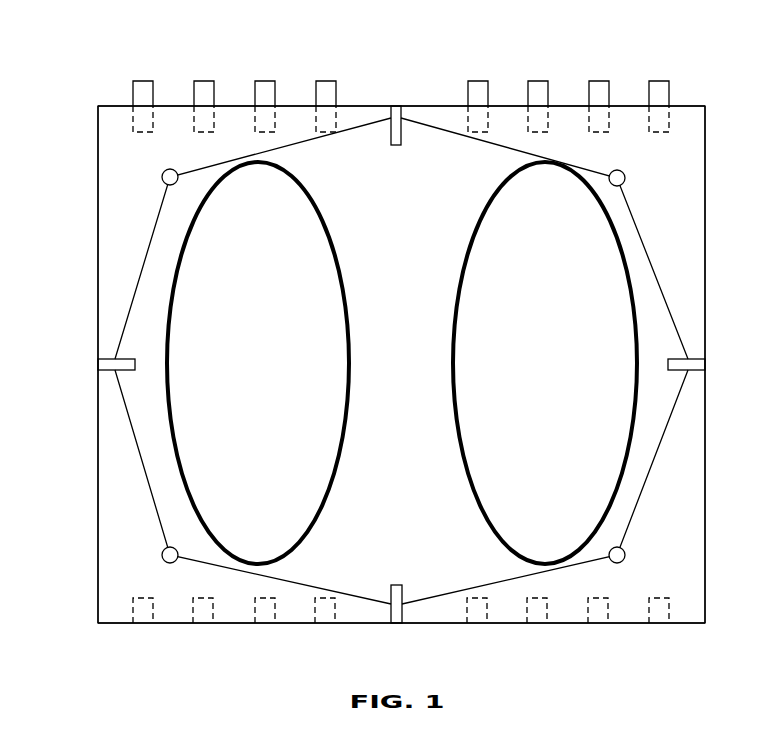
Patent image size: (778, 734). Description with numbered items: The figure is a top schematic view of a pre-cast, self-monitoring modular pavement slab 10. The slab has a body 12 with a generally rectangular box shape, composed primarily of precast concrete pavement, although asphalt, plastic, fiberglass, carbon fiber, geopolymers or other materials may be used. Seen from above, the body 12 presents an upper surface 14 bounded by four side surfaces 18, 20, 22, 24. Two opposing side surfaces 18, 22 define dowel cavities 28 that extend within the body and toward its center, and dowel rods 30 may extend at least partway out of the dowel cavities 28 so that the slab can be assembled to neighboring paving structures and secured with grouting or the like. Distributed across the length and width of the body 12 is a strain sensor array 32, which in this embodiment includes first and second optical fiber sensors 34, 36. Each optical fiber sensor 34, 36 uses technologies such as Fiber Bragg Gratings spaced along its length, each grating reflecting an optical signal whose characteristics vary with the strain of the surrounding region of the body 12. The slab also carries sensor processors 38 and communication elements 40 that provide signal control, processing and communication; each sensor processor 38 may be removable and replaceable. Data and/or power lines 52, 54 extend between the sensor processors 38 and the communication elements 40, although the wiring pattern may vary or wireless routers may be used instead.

The modular pavement slab 10 is at (393, 57).
The body 12 is at (66, 133).
The upper surface 14 is at (387, 497).
The side surface 18 is at (361, 624).
The side surface 20 is at (705, 218).
The side surface 22 is at (684, 105).
The side surface 24 is at (98, 268).
The dowel cavities 28 is at (148, 148).
The dowel rods 30 is at (237, 72).
The strain sensor array 32 is at (452, 236).
The first optical fiber sensor 34 is at (349, 362).
The second optical fiber sensor 36 is at (453, 368).
The sensor processor 38 is at (163, 183).
The communication element 40 is at (402, 138).
The data and/or power line 52 is at (133, 440).
The data and/or power line 54 is at (660, 455).